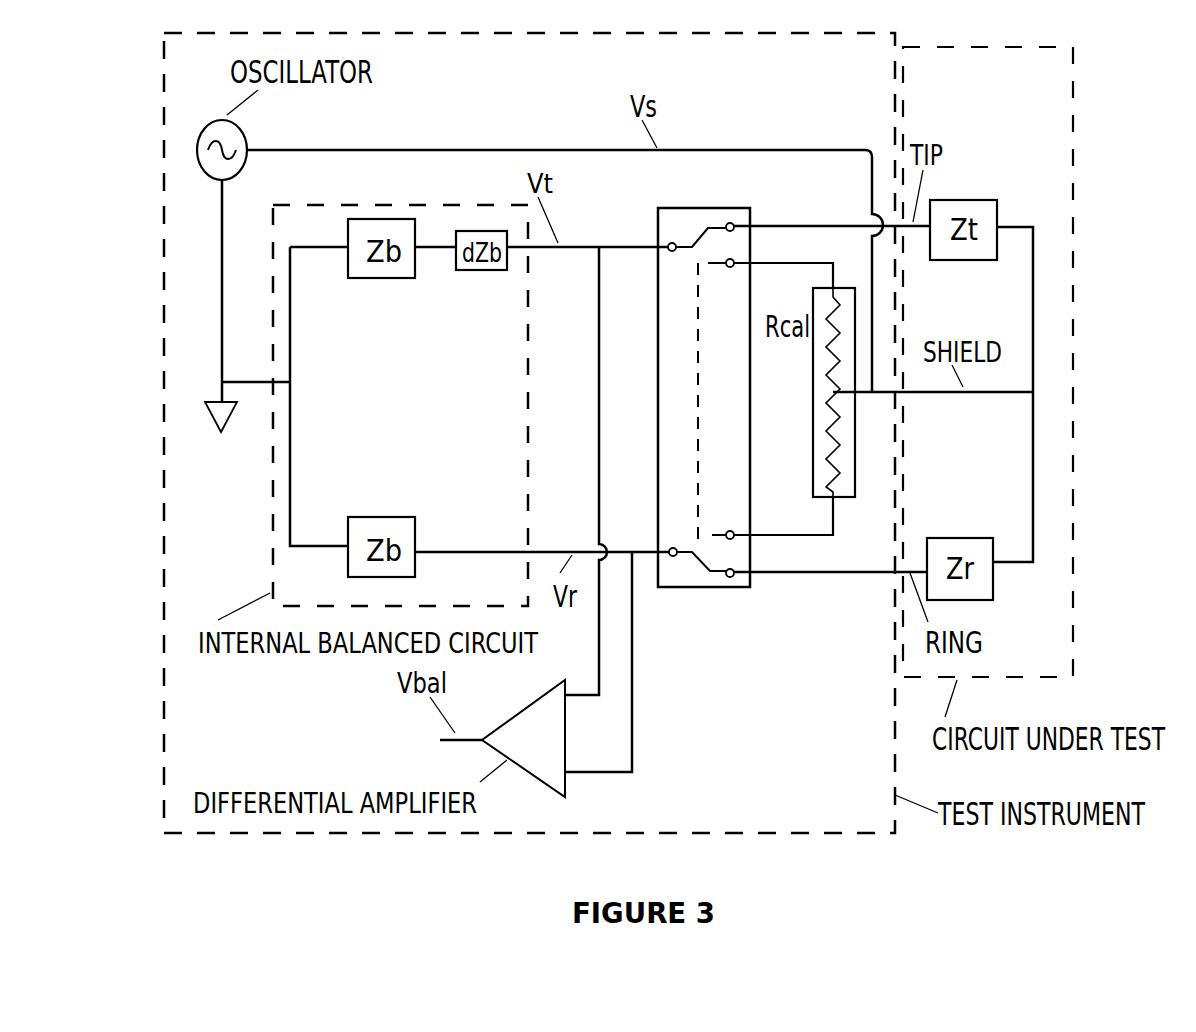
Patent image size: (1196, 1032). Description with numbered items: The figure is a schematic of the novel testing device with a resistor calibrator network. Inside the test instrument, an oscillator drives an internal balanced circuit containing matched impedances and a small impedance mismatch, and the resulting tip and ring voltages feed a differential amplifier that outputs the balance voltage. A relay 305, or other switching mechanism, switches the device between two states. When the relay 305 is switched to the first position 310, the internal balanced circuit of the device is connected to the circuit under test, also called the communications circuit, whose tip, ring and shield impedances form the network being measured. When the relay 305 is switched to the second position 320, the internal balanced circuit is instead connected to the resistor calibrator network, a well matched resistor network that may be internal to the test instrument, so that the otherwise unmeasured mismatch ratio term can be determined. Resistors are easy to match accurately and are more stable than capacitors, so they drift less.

The relay 305 is at (658, 427).
The POS1 310 is at (730, 228).
The POS2 320 is at (733, 262).